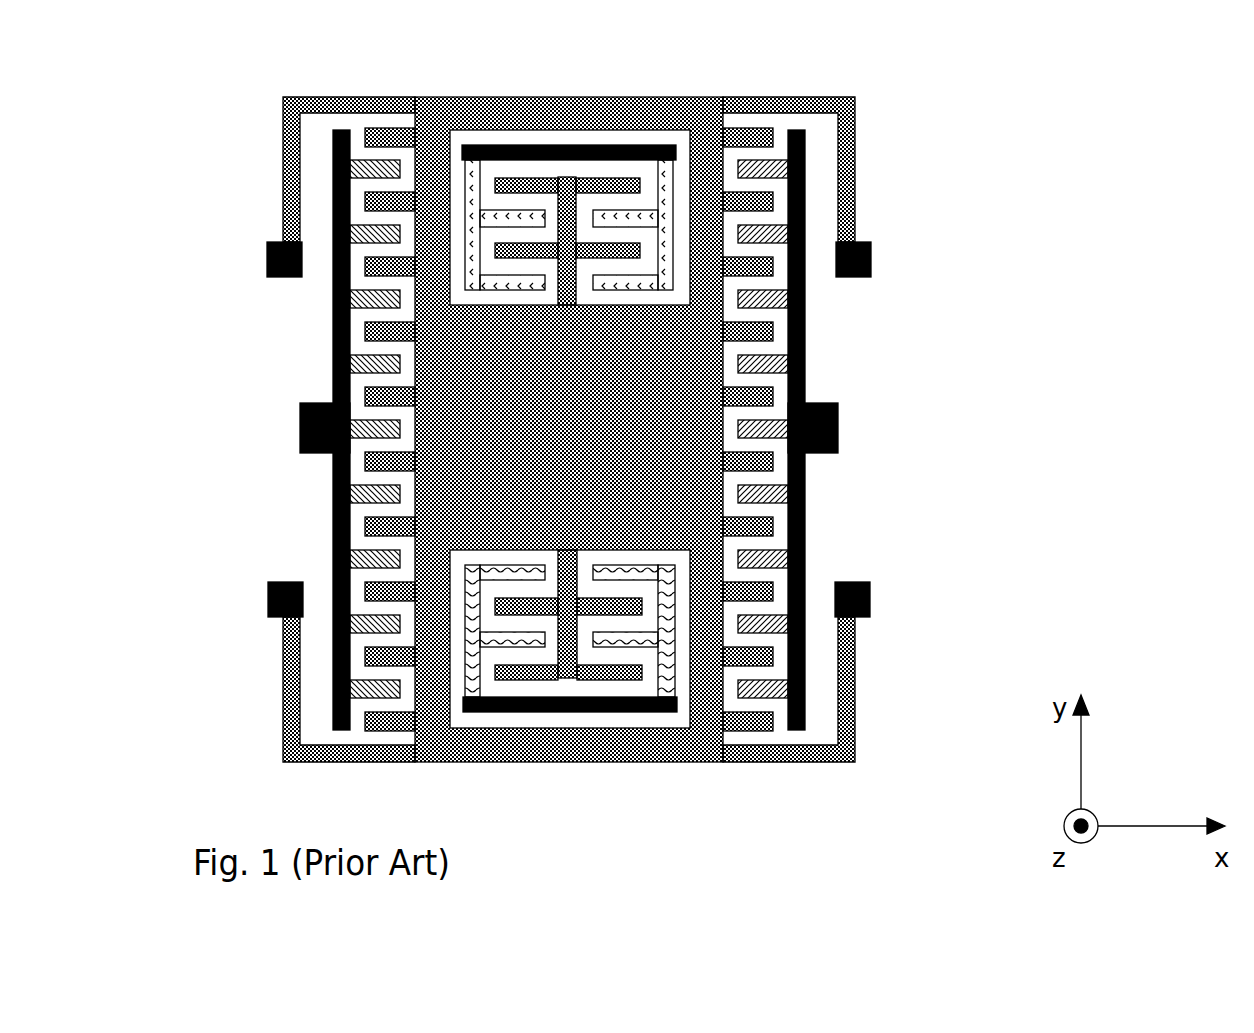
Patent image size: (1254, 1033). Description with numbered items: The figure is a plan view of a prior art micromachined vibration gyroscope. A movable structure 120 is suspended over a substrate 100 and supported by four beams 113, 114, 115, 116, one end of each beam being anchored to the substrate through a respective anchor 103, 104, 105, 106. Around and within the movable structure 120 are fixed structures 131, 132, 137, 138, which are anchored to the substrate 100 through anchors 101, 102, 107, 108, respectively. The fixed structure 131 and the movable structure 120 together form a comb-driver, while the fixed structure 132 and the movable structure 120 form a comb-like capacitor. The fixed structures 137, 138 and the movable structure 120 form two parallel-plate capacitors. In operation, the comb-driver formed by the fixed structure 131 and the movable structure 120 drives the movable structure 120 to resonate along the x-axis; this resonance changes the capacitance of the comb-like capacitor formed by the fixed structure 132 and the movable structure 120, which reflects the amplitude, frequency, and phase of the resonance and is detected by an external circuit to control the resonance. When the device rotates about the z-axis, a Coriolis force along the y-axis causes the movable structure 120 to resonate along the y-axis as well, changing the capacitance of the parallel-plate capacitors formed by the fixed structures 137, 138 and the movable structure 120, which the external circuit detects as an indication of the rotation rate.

The substrate 100 is at (562, 429).
The anchor 101 is at (300, 421).
The anchor 102 is at (838, 423).
The anchor 103 is at (270, 600).
The anchor 104 is at (868, 600).
The anchor 105 is at (871, 260).
The anchor 106 is at (267, 260).
The anchor 107 is at (495, 712).
The anchor 108 is at (495, 144).
The beam 113 is at (285, 683).
The beam 114 is at (853, 683).
The beam 115 is at (838, 145).
The beam 116 is at (300, 145).
The movable structure 120 is at (707, 372).
The fixed structure (comb-driver element) 131 is at (365, 250).
The fixed structure (comb-like capacitor element) 132 is at (772, 245).
The fixed structure (parallel-plate capacitor element) 137 is at (515, 645).
The fixed structure (parallel-plate capacitor element) 138 is at (512, 210).